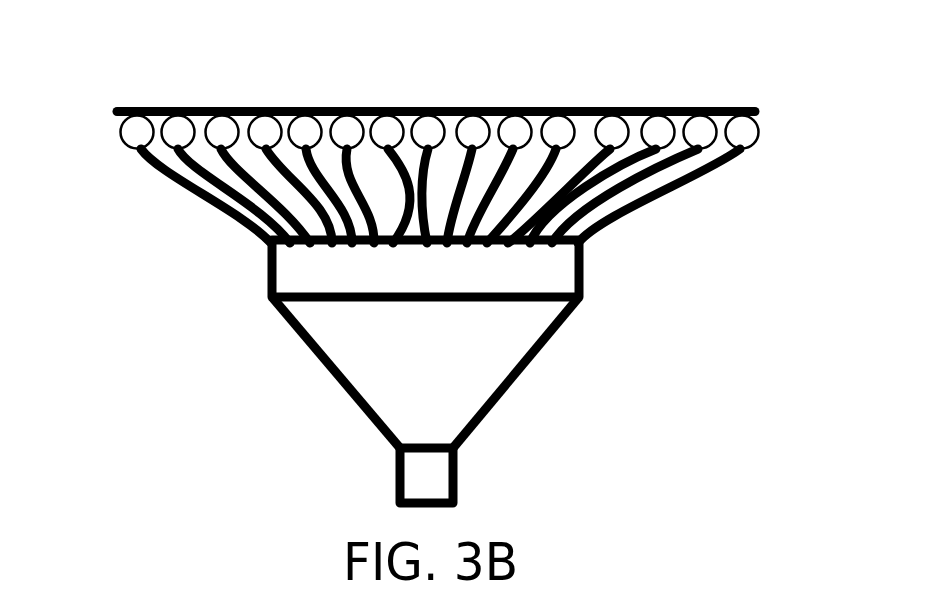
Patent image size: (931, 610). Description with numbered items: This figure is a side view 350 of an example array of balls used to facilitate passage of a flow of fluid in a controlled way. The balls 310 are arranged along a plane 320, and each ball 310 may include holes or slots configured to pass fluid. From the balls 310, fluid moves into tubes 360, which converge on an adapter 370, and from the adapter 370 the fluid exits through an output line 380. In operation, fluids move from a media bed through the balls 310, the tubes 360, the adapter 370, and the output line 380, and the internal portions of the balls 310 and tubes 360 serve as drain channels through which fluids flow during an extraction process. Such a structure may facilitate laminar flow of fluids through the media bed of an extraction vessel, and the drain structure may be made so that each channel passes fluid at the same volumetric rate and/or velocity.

The side view 350 is at (148, 72).
The plane 320 is at (253, 108).
The balls 310 is at (122, 147).
The tubes 360 is at (185, 193).
The adapter 370 is at (283, 323).
The output line 380 is at (458, 485).